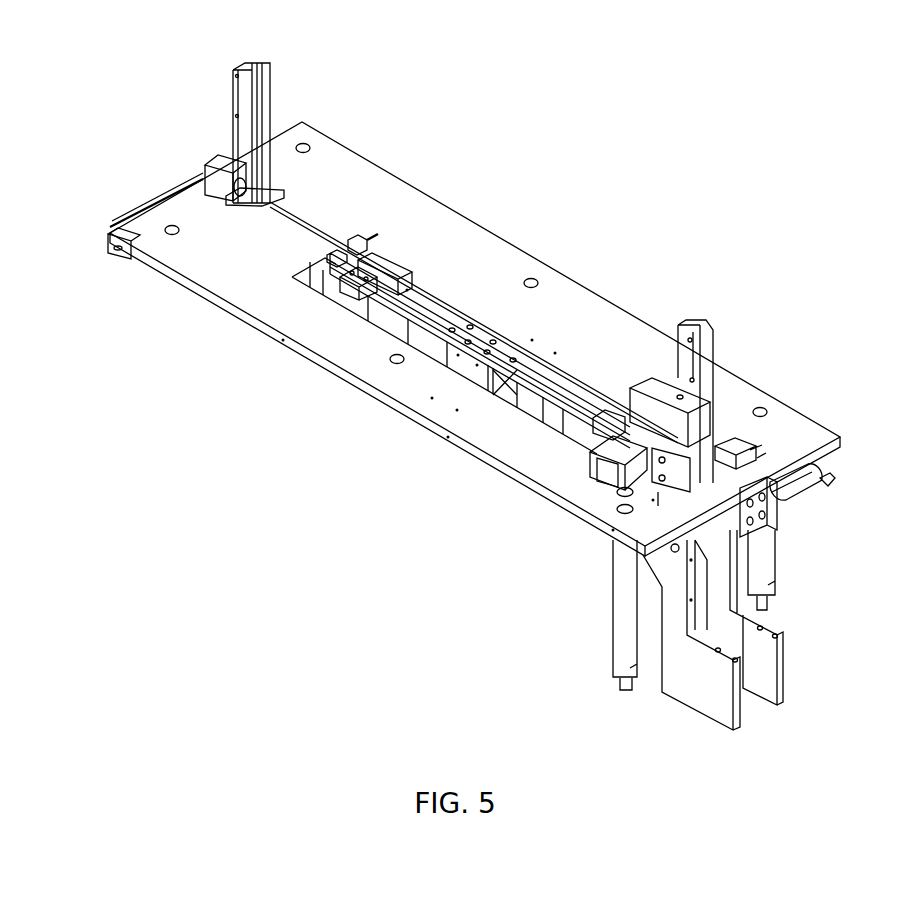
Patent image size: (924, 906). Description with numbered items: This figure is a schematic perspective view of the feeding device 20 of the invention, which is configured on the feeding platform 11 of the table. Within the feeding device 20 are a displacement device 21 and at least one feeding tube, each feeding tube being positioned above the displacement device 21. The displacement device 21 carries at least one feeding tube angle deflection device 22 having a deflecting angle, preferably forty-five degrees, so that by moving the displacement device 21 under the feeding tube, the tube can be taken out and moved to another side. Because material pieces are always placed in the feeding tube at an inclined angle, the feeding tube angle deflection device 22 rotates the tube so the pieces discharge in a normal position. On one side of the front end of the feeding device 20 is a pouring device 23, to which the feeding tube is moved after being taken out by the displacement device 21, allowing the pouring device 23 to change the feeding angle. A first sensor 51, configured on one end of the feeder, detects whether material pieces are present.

The feeding platform 11 is at (790, 428).
The feeding device 20 is at (600, 165).
The displacement device 21 is at (528, 365).
The feeding tube angle deflection device 22 is at (387, 263).
The pouring device 23 is at (596, 493).
The first sensor 51 is at (697, 513).